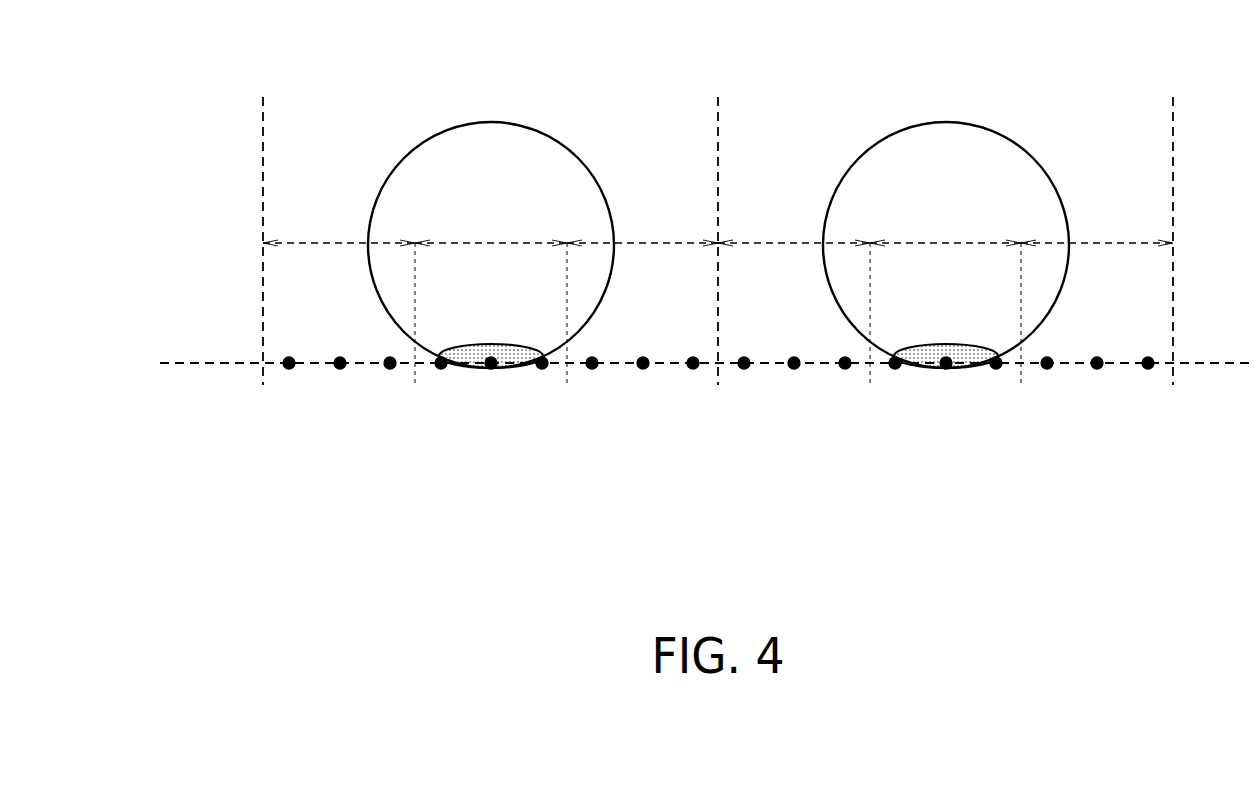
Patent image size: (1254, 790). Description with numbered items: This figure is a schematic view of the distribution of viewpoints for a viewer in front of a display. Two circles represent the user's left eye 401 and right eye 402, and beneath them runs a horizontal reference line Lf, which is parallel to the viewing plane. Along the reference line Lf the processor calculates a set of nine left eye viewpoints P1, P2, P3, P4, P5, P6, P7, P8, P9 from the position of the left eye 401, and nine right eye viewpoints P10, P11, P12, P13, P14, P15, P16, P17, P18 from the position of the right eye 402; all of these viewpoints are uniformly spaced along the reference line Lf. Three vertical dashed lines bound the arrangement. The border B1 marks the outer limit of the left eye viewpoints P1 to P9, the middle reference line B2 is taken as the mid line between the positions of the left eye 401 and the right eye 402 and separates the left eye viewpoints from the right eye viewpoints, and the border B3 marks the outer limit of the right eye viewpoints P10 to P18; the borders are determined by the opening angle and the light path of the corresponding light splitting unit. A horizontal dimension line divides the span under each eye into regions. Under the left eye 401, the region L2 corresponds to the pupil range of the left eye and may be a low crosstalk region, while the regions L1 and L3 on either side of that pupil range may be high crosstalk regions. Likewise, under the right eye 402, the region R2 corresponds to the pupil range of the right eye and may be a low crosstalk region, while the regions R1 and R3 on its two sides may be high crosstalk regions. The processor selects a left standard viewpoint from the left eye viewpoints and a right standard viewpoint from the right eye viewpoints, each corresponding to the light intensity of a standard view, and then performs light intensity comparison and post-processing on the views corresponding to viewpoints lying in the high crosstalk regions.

The left eye 401 is at (492, 121).
The right eye 402 is at (947, 121).
The border B1 is at (263, 224).
The middle reference line B2 is at (718, 224).
The border B3 is at (1173, 224).
The region L1 is at (341, 241).
The region L2 is at (492, 241).
The region L3 is at (643, 241).
The region R1 is at (797, 241).
The region R2 is at (947, 241).
The region R3 is at (1100, 241).
The reference line Lf is at (198, 361).
The left eye viewpoint P1 is at (289, 369).
The left eye viewpoint P2 is at (340, 369).
The left eye viewpoint P3 is at (390, 369).
The left eye viewpoint P4 is at (441, 369).
The left eye viewpoint P5 is at (491, 369).
The left eye viewpoint P6 is at (542, 369).
The left eye viewpoint P7 is at (592, 369).
The left eye viewpoint P8 is at (643, 369).
The left eye viewpoint P9 is at (693, 369).
The right eye viewpoint P10 is at (744, 369).
The right eye viewpoint P11 is at (794, 369).
The right eye viewpoint P12 is at (845, 369).
The right eye viewpoint P13 is at (895, 369).
The right eye viewpoint P14 is at (946, 369).
The right eye viewpoint P15 is at (996, 369).
The right eye viewpoint P16 is at (1047, 369).
The right eye viewpoint P17 is at (1097, 369).
The right eye viewpoint P18 is at (1148, 369).